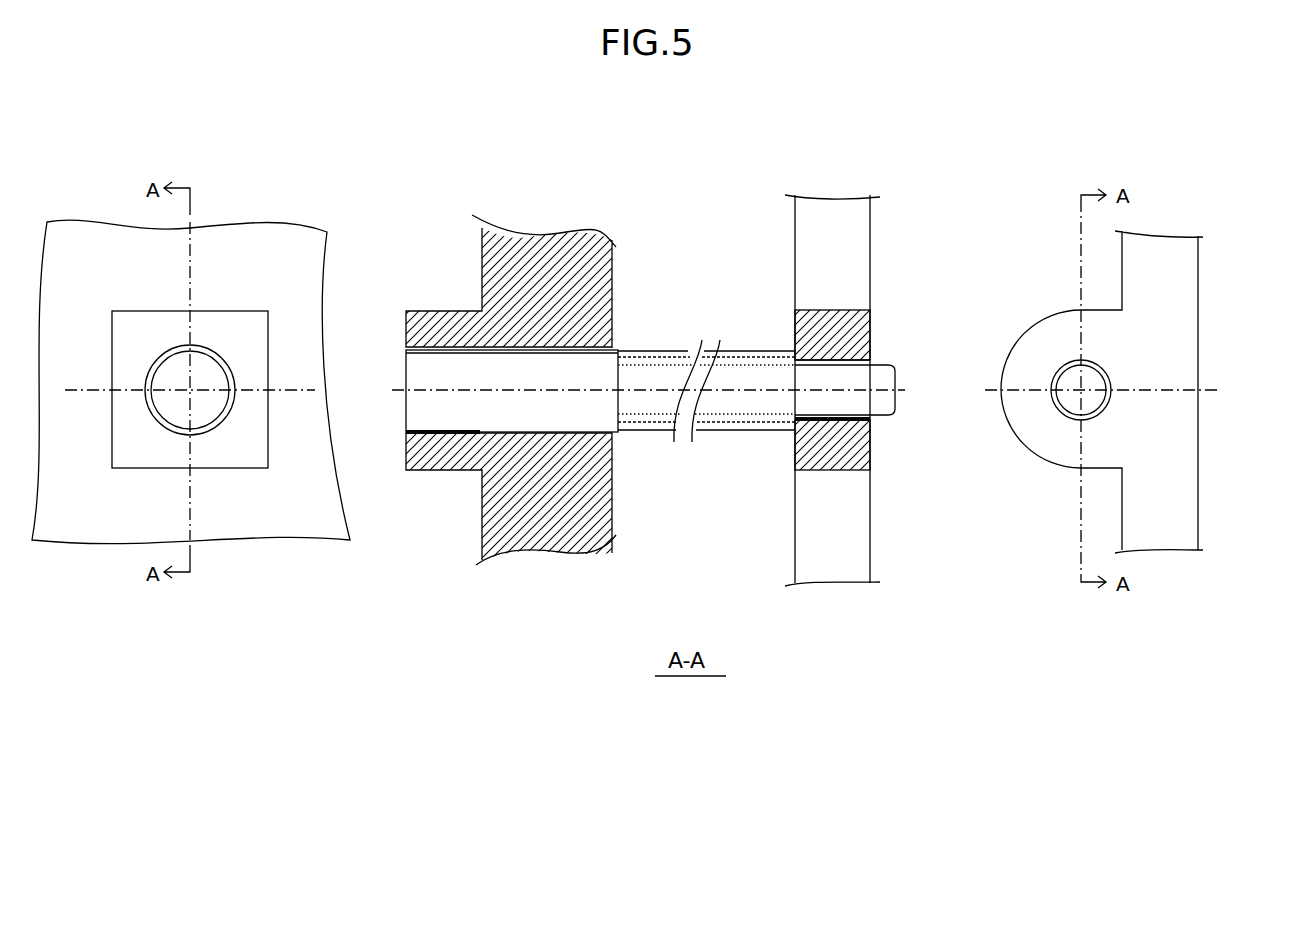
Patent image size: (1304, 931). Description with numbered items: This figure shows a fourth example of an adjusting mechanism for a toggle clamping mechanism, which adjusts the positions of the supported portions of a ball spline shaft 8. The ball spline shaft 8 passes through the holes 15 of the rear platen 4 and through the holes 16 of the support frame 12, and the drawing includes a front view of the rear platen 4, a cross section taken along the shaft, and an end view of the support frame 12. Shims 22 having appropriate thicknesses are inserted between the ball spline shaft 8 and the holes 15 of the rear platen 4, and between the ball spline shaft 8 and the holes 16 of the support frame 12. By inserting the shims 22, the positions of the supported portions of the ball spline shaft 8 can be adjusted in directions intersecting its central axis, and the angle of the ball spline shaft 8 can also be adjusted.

The rear platen 4 is at (300, 524).
The ball spline shaft 8 is at (888, 382).
The support frame 12 is at (862, 276).
The holes of the rear platen 15 is at (602, 340).
The holes of the support frame 16 is at (805, 352).
The shim 22 is at (205, 430).